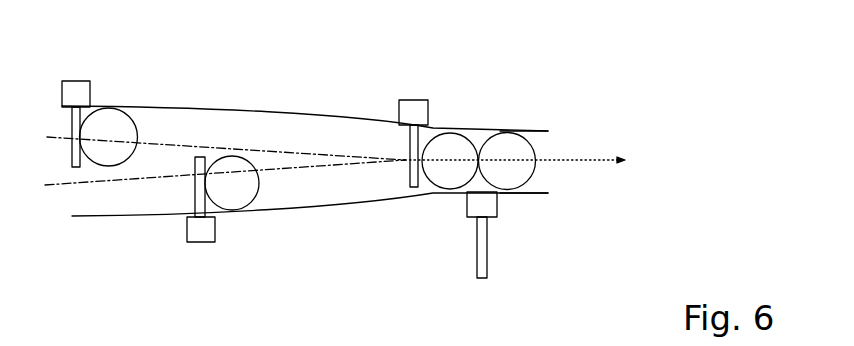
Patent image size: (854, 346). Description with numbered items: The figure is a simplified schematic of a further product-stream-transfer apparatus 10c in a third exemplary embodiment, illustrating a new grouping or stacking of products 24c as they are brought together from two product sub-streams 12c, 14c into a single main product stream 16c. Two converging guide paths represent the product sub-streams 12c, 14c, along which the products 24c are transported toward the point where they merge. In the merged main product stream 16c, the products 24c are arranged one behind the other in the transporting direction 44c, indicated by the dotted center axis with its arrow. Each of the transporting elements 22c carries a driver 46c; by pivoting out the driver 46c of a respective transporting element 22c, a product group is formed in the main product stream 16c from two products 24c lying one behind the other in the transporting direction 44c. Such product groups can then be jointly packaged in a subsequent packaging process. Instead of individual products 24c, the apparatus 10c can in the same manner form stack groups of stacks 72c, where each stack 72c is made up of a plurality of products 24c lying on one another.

The product-stream-transfer apparatus 10c is at (498, 99).
The product sub-stream 12c is at (292, 155).
The product sub-stream 14c is at (300, 167).
The main product stream 16c is at (545, 162).
The transporting element 22c is at (480, 190).
The product 24c is at (123, 140).
The stack 72c is at (222, 175).
The transporting direction 44c is at (597, 159).
The driver 46c is at (410, 187).